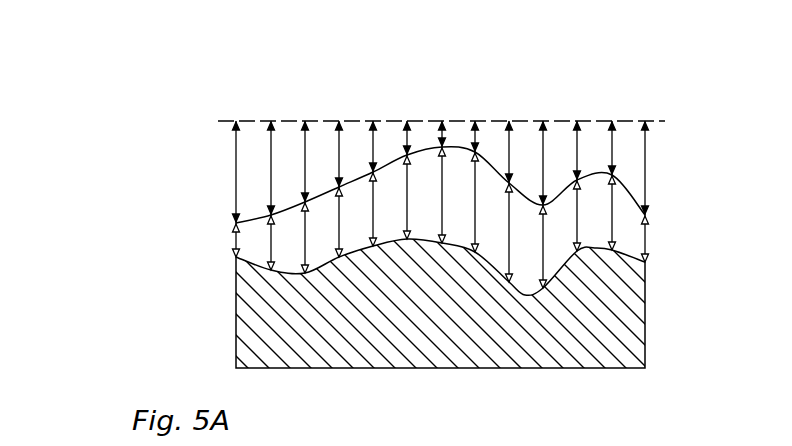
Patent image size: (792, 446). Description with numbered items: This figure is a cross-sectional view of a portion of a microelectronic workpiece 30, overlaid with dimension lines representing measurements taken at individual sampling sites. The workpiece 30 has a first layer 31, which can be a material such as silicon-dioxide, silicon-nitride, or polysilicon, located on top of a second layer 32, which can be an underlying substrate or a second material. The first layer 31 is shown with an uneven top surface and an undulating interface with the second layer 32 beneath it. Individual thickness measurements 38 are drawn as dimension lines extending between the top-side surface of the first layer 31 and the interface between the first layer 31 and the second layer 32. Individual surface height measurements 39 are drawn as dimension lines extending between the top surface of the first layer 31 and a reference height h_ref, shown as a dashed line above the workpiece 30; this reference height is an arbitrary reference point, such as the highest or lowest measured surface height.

The microelectronic workpiece 30 is at (664, 104).
The first layer 31 is at (632, 248).
The second layer 32 is at (632, 335).
The thickness measurements 38 is at (442, 225).
The surface height measurements 39 is at (517, 125).